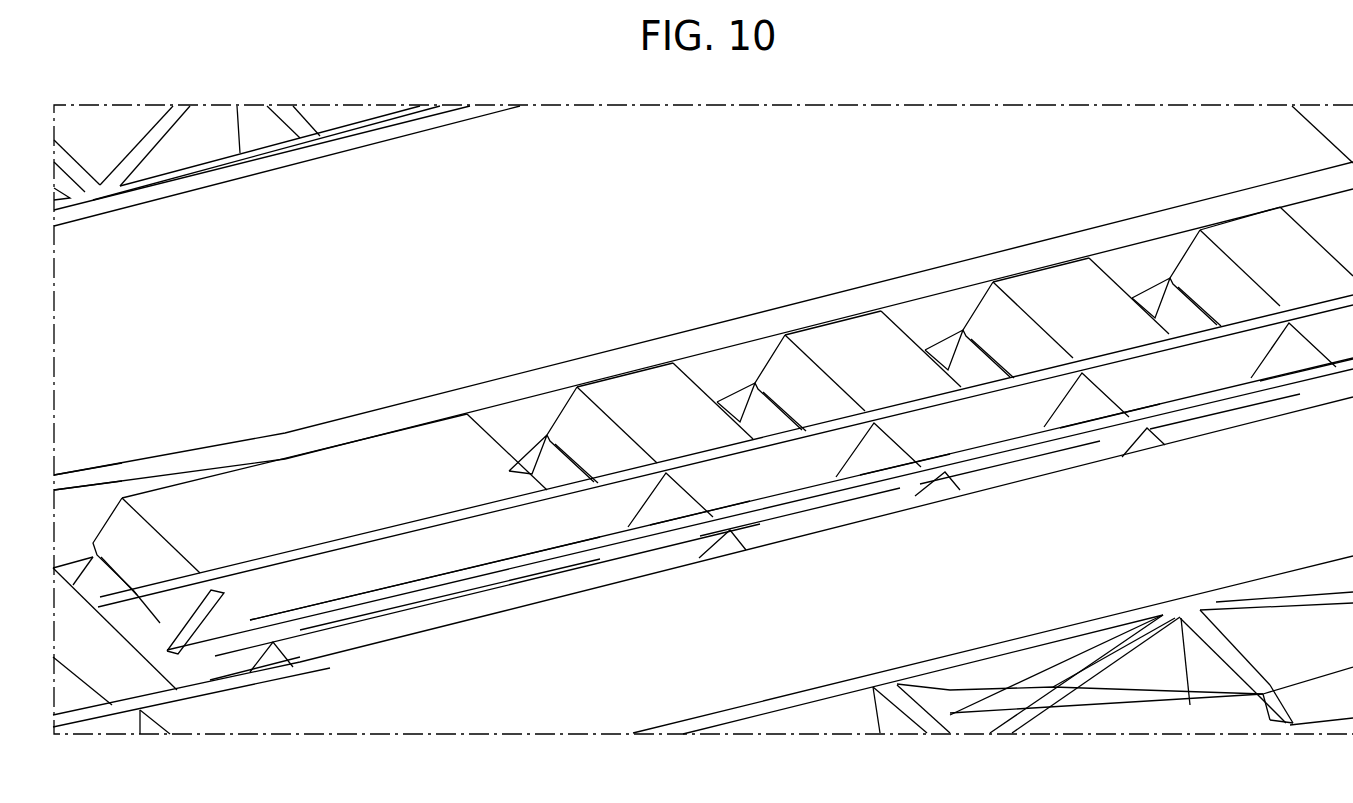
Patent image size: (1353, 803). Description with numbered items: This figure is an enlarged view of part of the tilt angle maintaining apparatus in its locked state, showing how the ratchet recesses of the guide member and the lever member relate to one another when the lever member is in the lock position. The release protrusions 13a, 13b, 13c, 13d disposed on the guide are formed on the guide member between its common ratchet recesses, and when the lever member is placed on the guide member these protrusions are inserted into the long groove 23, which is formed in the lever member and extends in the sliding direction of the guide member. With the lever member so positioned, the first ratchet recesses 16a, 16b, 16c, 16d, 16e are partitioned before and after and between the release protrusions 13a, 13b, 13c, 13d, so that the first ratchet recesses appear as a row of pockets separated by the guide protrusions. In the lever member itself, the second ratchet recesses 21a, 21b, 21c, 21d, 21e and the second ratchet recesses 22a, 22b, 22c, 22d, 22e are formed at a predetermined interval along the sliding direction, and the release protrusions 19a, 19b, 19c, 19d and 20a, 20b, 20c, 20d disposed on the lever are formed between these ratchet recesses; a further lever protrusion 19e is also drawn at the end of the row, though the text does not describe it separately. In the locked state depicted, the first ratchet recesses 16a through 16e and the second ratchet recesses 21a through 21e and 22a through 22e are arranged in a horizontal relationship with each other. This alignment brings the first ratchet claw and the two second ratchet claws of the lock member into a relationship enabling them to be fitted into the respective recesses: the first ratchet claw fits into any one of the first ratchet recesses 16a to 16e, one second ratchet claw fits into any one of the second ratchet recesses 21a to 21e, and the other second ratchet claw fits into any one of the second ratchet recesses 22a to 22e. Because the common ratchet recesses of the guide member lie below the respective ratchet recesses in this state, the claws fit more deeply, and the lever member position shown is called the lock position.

The release protrusion disposed on the guide 13a is at (425, 613).
The release protrusion disposed on the guide 13b is at (741, 576).
The release protrusion disposed on the guide 13c is at (956, 519).
The release protrusion disposed on the guide 13d is at (1163, 462).
The first ratchet recess 16a is at (203, 502).
The first ratchet recess 16b is at (670, 384).
The first ratchet recess 16c is at (871, 338).
The first ratchet recess 16d is at (1064, 293).
The first ratchet recess 16e is at (1270, 247).
The release protrusion disposed on the lever 19a is at (320, 453).
The release protrusion disposed on the lever 19b is at (648, 351).
The release protrusion disposed on the lever 19c is at (855, 299).
The release protrusion disposed on the lever 19d is at (1066, 246).
The slab 19e is at (1261, 266).
The release protrusion disposed on the lever 20a is at (450, 634).
The release protrusion disposed on the lever 20b is at (800, 553).
The release protrusion disposed on the lever 20c is at (1010, 509).
The release protrusion disposed on the lever 20d is at (1225, 456).
The second ratchet recess 21a is at (91, 432).
The second ratchet recess 21b is at (513, 387).
The second ratchet recess 21c is at (730, 334).
The second ratchet recess 21d is at (940, 284).
The second ratchet recess 21e is at (1151, 231).
The second ratchet recess 22a is at (255, 723).
The second ratchet recess 22b is at (700, 581).
The second ratchet recess 22c is at (905, 534).
The second ratchet recess 22d is at (1110, 483).
The second ratchet recess 22e is at (1306, 435).
The long groove 23 is at (142, 473).